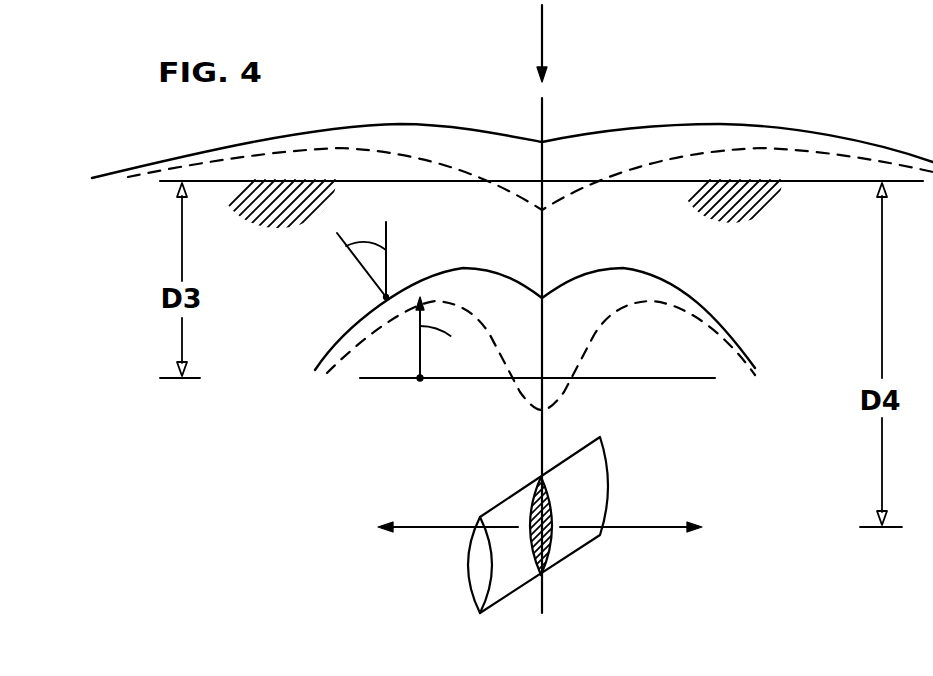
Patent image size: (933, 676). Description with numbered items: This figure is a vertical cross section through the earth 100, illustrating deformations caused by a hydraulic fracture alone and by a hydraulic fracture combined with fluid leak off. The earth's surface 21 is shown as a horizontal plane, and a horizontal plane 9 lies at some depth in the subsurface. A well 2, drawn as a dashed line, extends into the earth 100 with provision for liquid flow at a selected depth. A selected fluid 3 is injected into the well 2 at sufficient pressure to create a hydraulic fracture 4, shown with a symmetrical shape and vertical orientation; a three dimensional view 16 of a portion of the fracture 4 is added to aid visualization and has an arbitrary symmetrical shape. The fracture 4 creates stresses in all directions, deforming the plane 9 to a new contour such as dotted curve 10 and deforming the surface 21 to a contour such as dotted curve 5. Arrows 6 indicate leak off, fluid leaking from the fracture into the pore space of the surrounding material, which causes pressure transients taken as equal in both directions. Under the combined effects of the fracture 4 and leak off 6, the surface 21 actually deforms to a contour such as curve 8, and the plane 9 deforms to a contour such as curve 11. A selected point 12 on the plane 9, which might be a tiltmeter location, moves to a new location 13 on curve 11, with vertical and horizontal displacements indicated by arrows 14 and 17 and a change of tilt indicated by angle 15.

The well 2 is at (543, 228).
The injected fluid 3 is at (542, 50).
The hydraulic fracture 4 is at (532, 562).
The deformation of earth's surface due to hydraulic fracture 5 is at (636, 163).
The fluid leak off 6 is at (440, 526).
The deformation of earth's surface due to combined hydraulic fracture and fluid leak 8 is at (658, 125).
The horizontal plane in the subsurface 9 is at (678, 378).
The deformation of the plane due to hydraulic fracture 10 is at (628, 306).
The deformation of the plane due to combined hydraulic fracture and fluid leak off 11 is at (643, 265).
The point on the plane 12 is at (420, 382).
The point on deformed surface 13 is at (382, 297).
The vertical displacement of the point 14 is at (456, 347).
The change of tilt at the point 15 is at (344, 246).
The three dimensional representation of hydraulic fracture 16 is at (468, 588).
The horizontal displacement of the point 17 is at (421, 298).
The surface of the earth 21 is at (755, 180).
The earth 100 is at (858, 252).